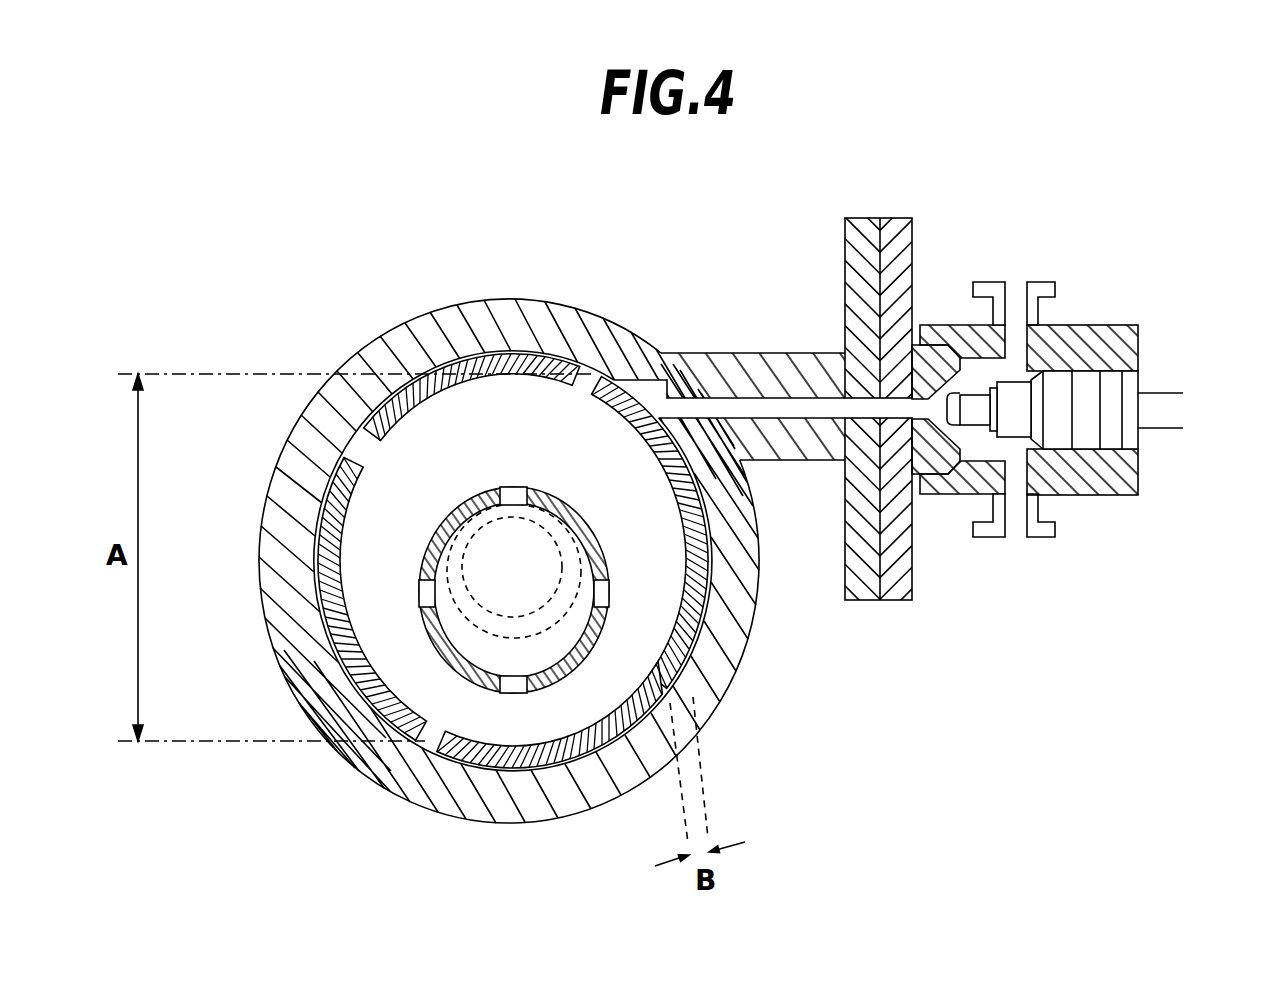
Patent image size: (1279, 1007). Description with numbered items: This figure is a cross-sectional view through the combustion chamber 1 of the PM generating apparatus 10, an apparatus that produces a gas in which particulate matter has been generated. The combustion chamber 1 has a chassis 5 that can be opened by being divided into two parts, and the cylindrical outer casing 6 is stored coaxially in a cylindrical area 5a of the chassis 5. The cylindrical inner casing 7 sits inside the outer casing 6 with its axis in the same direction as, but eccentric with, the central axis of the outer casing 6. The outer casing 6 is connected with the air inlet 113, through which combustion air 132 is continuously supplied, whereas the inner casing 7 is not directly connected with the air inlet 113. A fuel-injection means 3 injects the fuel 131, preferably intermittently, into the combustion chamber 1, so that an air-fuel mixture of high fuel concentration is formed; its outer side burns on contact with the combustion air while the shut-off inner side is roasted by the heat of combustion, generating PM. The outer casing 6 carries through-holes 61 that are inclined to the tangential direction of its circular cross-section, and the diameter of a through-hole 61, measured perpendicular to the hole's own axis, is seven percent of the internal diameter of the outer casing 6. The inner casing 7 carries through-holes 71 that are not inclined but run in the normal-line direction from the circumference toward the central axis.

The combustion chamber 1 is at (409, 270).
The PM generating apparatus 10 is at (987, 133).
The fuel-injection means 3 is at (1085, 388).
The chassis 5 is at (609, 498).
The cylindrical area 5a is at (470, 320).
The outer casing 6 is at (535, 365).
The through-holes 61 is at (593, 386).
The inner casing 7 is at (600, 548).
The through-holes 71 is at (603, 603).
The air inlet 113 is at (1044, 287).
The fuel 131 is at (1190, 412).
The combustion air 132 is at (1017, 270).